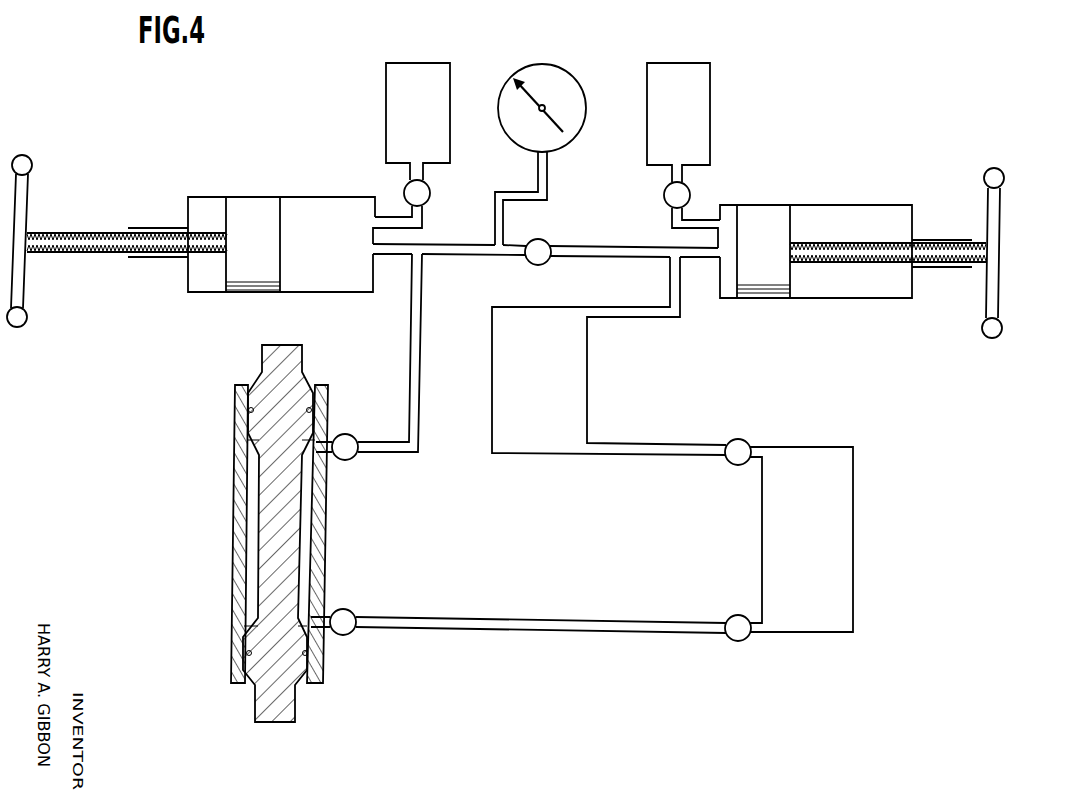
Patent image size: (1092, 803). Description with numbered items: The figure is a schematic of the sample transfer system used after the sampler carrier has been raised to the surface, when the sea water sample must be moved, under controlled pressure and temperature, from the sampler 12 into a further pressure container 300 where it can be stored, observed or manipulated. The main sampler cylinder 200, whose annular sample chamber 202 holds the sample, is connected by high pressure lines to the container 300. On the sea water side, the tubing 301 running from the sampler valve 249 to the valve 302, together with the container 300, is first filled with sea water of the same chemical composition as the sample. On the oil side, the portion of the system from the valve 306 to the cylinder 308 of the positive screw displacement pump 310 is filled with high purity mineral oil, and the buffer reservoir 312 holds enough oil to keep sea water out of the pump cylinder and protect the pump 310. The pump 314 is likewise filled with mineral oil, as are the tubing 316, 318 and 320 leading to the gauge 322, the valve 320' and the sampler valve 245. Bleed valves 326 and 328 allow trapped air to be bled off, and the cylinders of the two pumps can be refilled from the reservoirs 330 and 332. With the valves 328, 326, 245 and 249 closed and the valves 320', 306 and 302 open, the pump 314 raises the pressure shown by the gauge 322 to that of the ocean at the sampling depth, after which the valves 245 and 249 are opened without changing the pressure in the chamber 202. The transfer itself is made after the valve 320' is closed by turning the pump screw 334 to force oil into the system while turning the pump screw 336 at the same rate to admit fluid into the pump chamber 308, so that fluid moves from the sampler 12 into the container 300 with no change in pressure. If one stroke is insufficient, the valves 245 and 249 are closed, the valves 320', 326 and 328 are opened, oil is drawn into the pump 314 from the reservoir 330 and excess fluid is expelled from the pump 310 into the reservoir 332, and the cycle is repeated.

The sampler 12 is at (229, 520).
The main sampler cylinder 200 is at (236, 600).
The sample chamber 202 is at (251, 480).
The valve 245 is at (350, 462).
The valve 249 is at (350, 610).
The pressure container 300 is at (820, 547).
The tubing 301 is at (573, 617).
The valve 302 is at (740, 615).
The valve 306 is at (739, 439).
The cylinder 308 is at (729, 289).
The positive screw displacement pump 310 is at (869, 203).
The buffer reservoir 312 is at (556, 389).
The pump 314 is at (263, 195).
The tubing 316 is at (441, 257).
The tubing 318 is at (508, 191).
The tubing 320 is at (390, 353).
The valve 320' is at (561, 264).
The gauge 322 is at (548, 67).
The bleed valve 326 is at (429, 197).
The bleed valve 328 is at (664, 198).
The reservoir 330 is at (433, 110).
The reservoir 332 is at (692, 111).
The pump screw 334 is at (32, 168).
The pump screw 336 is at (1003, 180).